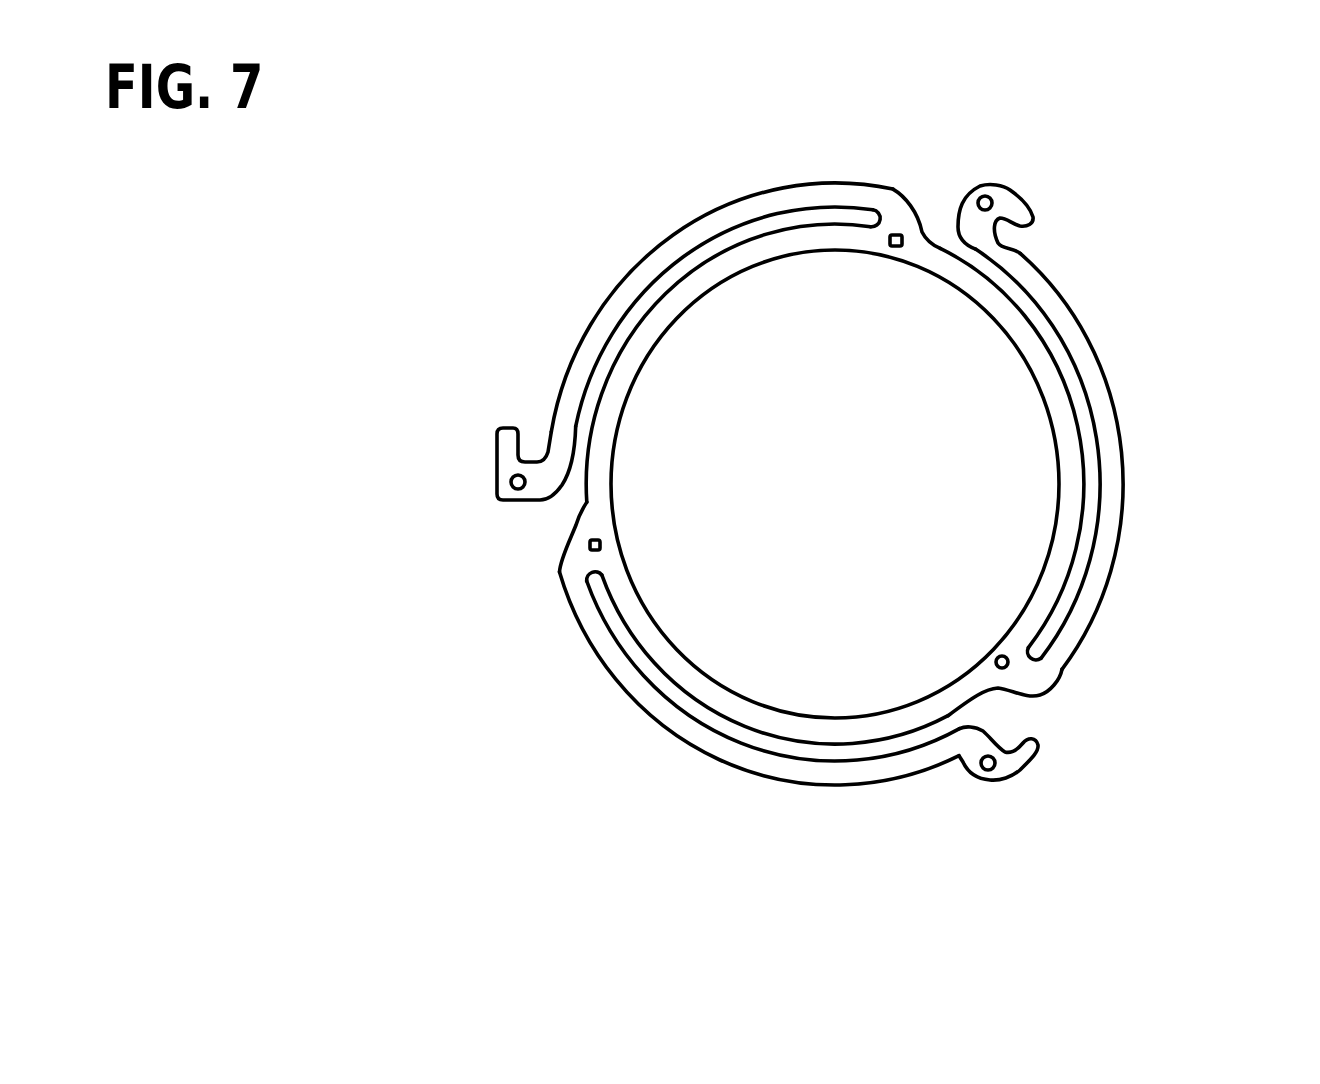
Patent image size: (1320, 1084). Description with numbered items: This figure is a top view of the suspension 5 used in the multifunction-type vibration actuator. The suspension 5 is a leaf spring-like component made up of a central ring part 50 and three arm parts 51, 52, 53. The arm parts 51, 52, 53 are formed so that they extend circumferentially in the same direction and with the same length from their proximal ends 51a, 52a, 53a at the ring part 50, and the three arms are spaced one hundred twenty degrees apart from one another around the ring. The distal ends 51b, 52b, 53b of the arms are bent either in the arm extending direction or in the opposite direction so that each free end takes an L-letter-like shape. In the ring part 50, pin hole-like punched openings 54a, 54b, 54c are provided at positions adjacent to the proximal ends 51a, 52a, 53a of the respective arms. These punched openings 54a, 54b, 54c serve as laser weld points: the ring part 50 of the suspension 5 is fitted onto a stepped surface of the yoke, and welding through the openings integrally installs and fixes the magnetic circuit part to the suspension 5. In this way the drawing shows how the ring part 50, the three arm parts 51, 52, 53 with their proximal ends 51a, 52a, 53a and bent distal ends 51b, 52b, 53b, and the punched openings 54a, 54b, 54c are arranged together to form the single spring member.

The suspension 5 is at (702, 782).
The ring part 50 is at (1052, 523).
The arm part 51 is at (590, 306).
The proximal end of the arm 51a is at (894, 208).
The distal end of the arm 51b is at (497, 449).
The arm part 52 is at (799, 790).
The proximal end of the arm 52a is at (565, 565).
The distal end of the arm 52b is at (1017, 762).
The arm part 53 is at (1124, 418).
The proximal end of the arm 53a is at (1030, 682).
The distal end of the arm 53b is at (1020, 207).
The punched opening 54a is at (602, 543).
The punched opening 54b is at (998, 659).
The punched opening 54c is at (897, 247).